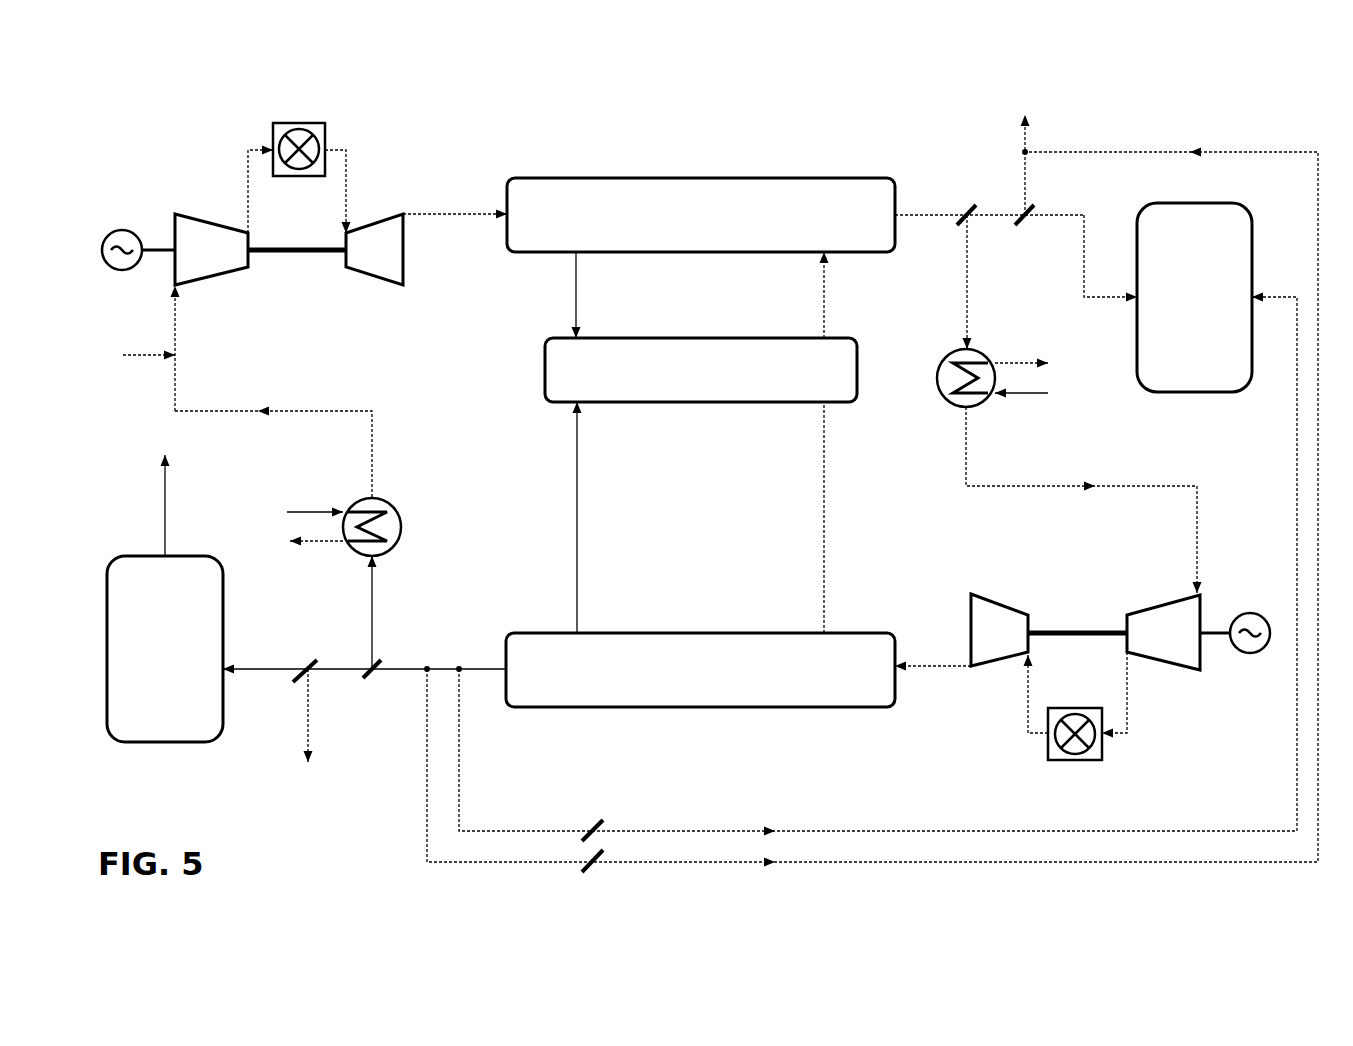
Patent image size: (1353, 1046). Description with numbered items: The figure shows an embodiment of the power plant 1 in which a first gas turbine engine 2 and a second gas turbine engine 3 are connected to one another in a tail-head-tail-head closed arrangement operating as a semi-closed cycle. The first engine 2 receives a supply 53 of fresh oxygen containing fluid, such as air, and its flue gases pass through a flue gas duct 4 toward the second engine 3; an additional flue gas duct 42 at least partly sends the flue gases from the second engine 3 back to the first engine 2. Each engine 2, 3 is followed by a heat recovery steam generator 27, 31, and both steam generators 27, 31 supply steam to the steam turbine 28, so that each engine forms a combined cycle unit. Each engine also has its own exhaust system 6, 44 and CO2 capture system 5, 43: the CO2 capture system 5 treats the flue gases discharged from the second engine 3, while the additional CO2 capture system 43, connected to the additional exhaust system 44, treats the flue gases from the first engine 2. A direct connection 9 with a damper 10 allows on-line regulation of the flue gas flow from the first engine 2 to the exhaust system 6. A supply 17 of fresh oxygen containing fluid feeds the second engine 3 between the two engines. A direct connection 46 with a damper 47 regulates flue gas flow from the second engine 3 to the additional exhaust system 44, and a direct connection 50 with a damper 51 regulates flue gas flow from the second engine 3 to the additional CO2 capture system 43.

The power plant 1 is at (625, 158).
The first gas turbine engine 2 is at (247, 360).
The second gas turbine engine 3 is at (1031, 565).
The flue gas duct 4 is at (961, 455).
The CO2 capture system 5 is at (153, 657).
The exhaust system 6 is at (306, 733).
The direct connection 9 is at (308, 717).
The damper 10 is at (293, 682).
The supply of fresh oxygen containing fluid 17 is at (1203, 534).
The heat recovery steam generator 27 is at (717, 228).
The steam turbine 28 is at (717, 385).
The heat recovery steam generator 31 is at (718, 685).
The additional flue gas duct 42 is at (372, 452).
The additional CO2 capture system 43 is at (1212, 310).
The additional exhaust system 44 is at (1025, 147).
The direct connection 46 is at (963, 858).
The damper 47 is at (602, 847).
The direct connection 50 is at (874, 828).
The damper 51 is at (603, 817).
The supply of fresh oxygen containing fluid 53 is at (143, 357).